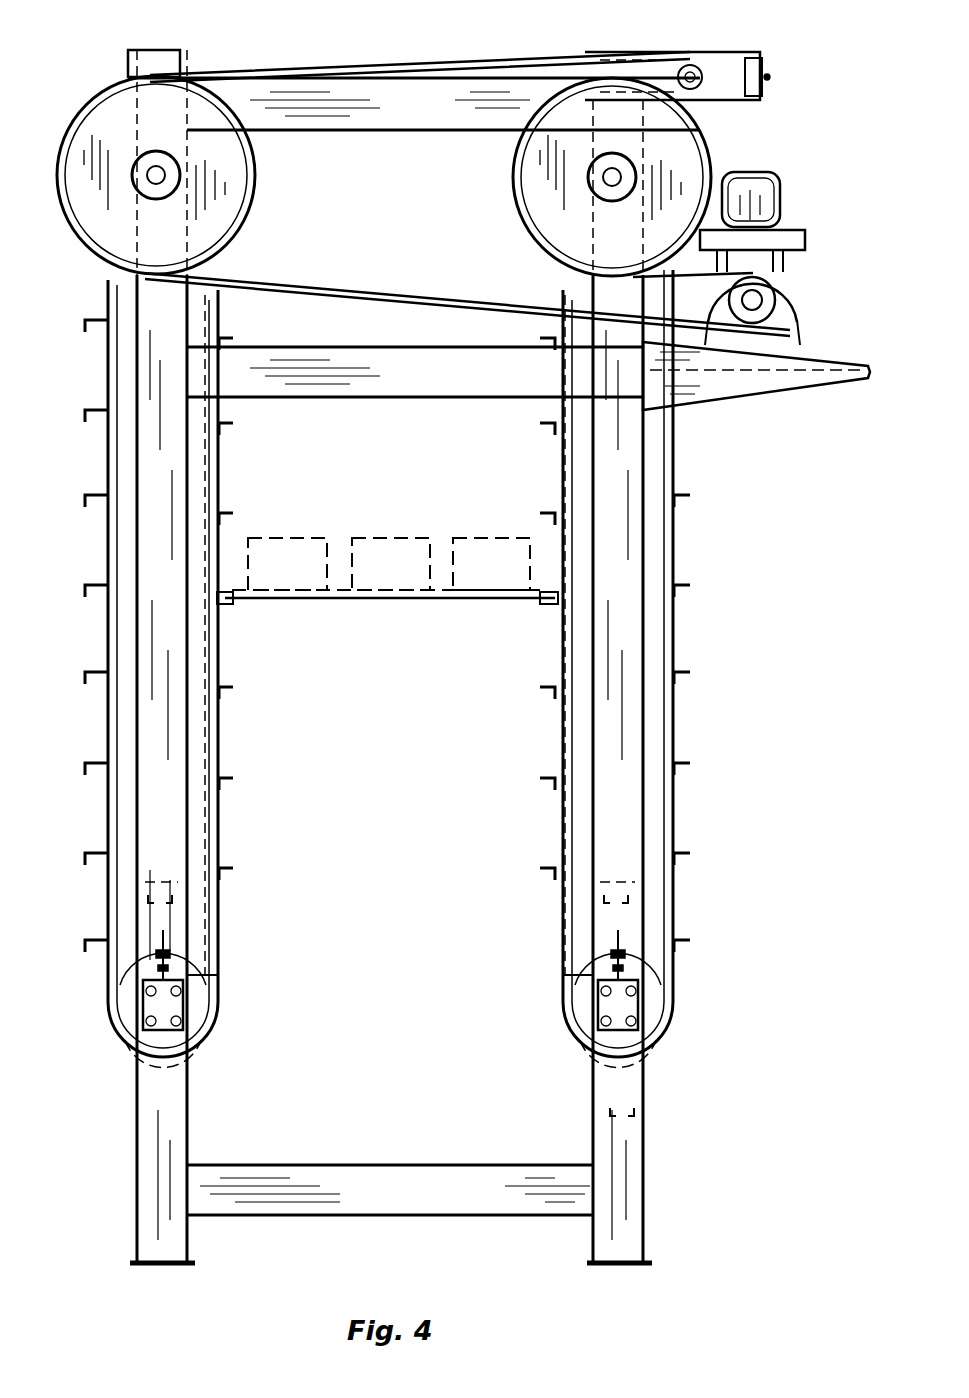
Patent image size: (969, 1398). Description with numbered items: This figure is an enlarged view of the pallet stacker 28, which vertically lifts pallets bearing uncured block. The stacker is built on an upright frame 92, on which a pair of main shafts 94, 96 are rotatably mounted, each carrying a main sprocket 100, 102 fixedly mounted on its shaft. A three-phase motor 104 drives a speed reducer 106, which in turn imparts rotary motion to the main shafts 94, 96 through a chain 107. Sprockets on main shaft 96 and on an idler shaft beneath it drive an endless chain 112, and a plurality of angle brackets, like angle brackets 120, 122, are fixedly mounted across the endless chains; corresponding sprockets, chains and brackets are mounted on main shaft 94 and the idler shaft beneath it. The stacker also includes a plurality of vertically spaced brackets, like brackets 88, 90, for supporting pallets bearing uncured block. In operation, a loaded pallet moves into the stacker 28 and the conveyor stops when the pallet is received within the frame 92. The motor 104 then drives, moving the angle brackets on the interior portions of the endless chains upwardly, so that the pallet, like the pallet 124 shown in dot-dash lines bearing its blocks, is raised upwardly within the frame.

The pallet stacker 28 is at (678, 430).
The bracket 88 is at (104, 318).
The bracket 90 is at (104, 408).
The upright frame 92 is at (623, 718).
The main shaft 94 is at (158, 172).
The main shaft 96 is at (615, 175).
The main sprocket 100 is at (108, 128).
The main sprocket 102 is at (557, 150).
The three-phase motor 104 is at (758, 186).
The speed reducer 106 is at (794, 288).
The chain 107 is at (388, 292).
The endless chain 112 is at (672, 722).
The angle bracket 120 is at (688, 758).
The angle bracket 122 is at (688, 849).
The pallet 124 is at (355, 600).